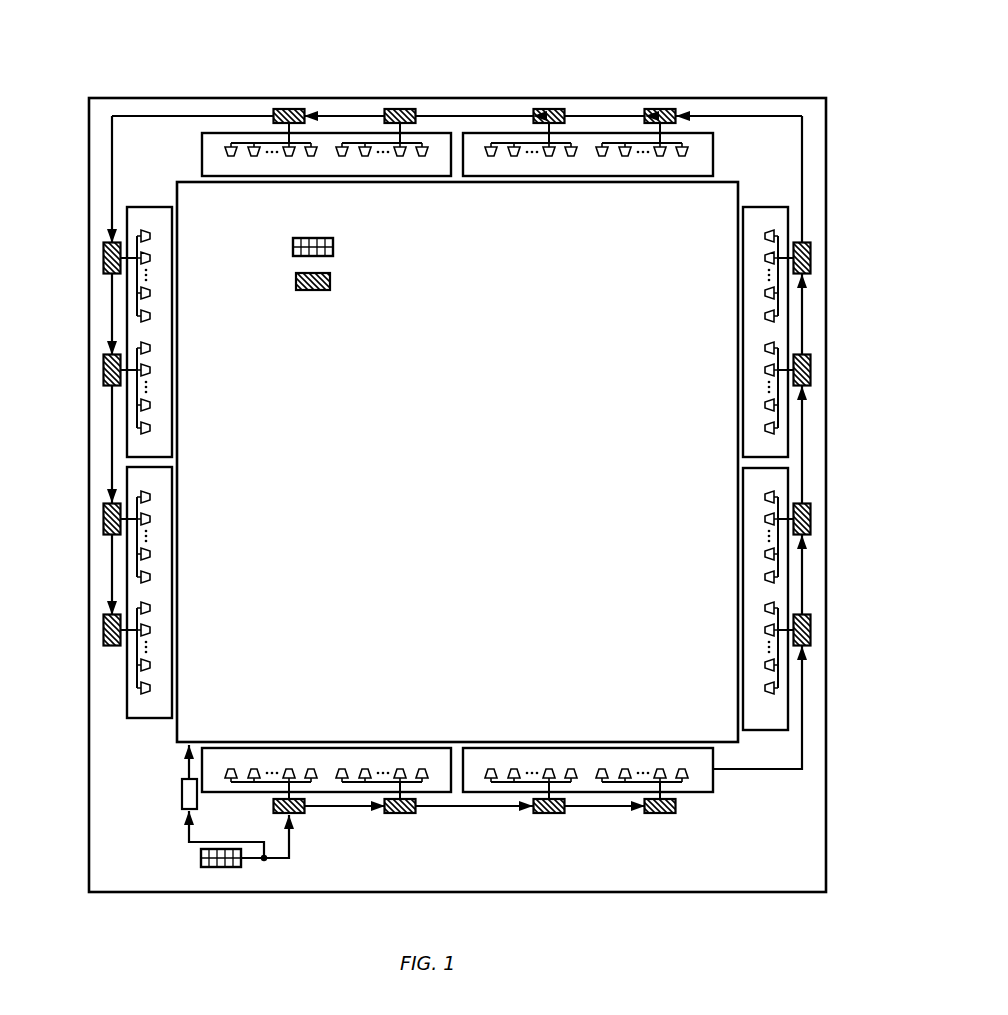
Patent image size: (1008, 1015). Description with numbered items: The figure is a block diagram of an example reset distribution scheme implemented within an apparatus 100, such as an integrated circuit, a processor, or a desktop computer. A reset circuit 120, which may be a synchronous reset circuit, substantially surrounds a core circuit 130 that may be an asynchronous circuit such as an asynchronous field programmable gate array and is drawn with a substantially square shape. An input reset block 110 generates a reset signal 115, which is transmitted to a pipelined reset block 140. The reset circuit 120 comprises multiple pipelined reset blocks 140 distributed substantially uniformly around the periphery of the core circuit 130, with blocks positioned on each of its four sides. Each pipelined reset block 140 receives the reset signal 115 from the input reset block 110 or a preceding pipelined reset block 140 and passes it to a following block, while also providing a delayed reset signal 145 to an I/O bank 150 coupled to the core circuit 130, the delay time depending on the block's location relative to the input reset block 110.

The apparatus 100 is at (788, 47).
The input reset block 110 is at (333, 245).
The reset signal 115 is at (252, 858).
The reset circuit 120 is at (796, 109).
The core circuit 130 is at (733, 182).
The pipelined reset block 140 is at (400, 109).
The delayed reset signal 145 is at (405, 795).
The I/O bank 150 is at (327, 176).